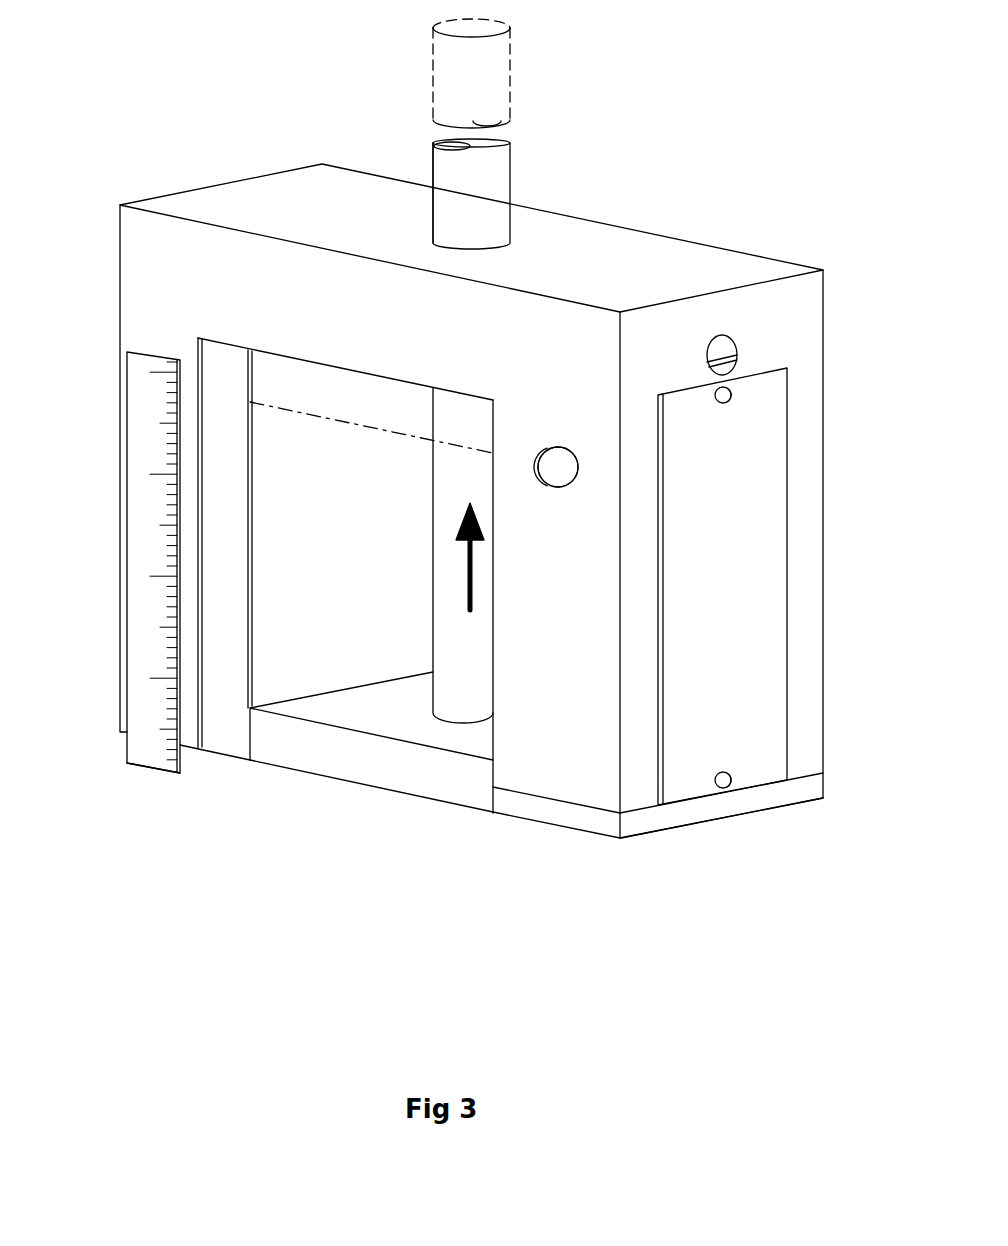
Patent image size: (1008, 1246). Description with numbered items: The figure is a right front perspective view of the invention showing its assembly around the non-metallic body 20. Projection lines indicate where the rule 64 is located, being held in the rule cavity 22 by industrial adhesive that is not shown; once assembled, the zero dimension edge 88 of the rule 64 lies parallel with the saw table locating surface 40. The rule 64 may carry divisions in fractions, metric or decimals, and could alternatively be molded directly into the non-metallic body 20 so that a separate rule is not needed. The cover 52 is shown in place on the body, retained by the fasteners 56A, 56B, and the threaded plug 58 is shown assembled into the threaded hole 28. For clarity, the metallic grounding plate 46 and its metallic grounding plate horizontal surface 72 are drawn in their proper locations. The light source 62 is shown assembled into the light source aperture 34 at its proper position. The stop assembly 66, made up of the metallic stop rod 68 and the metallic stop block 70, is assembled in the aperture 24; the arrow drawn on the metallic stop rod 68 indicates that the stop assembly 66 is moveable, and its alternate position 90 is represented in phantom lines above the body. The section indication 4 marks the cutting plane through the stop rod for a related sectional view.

The non-metallic body 20 is at (658, 262).
The rule cavity 22 is at (223, 522).
The aperture 24 is at (487, 247).
The threaded hole 28 is at (732, 336).
The light source aperture 34 is at (555, 446).
The saw table locating surface 40 is at (222, 755).
The metallic grounding plate 46 is at (548, 813).
The cover 52 is at (738, 562).
The fastener 56A is at (723, 403).
The fastener 56B is at (723, 772).
The threaded plug 58 is at (737, 355).
The light source 62 is at (558, 467).
The rule 64 is at (143, 538).
The stop assembly 66 is at (518, 212).
The metallic stop rod 68 is at (453, 575).
The metallic stop block 70 is at (370, 762).
The metallic grounding plate horizontal surface 72 is at (722, 820).
The "0" dimension edge 88 is at (152, 770).
The alternate position 90 is at (490, 70).
The section line 4- 4 is at (443, 203).